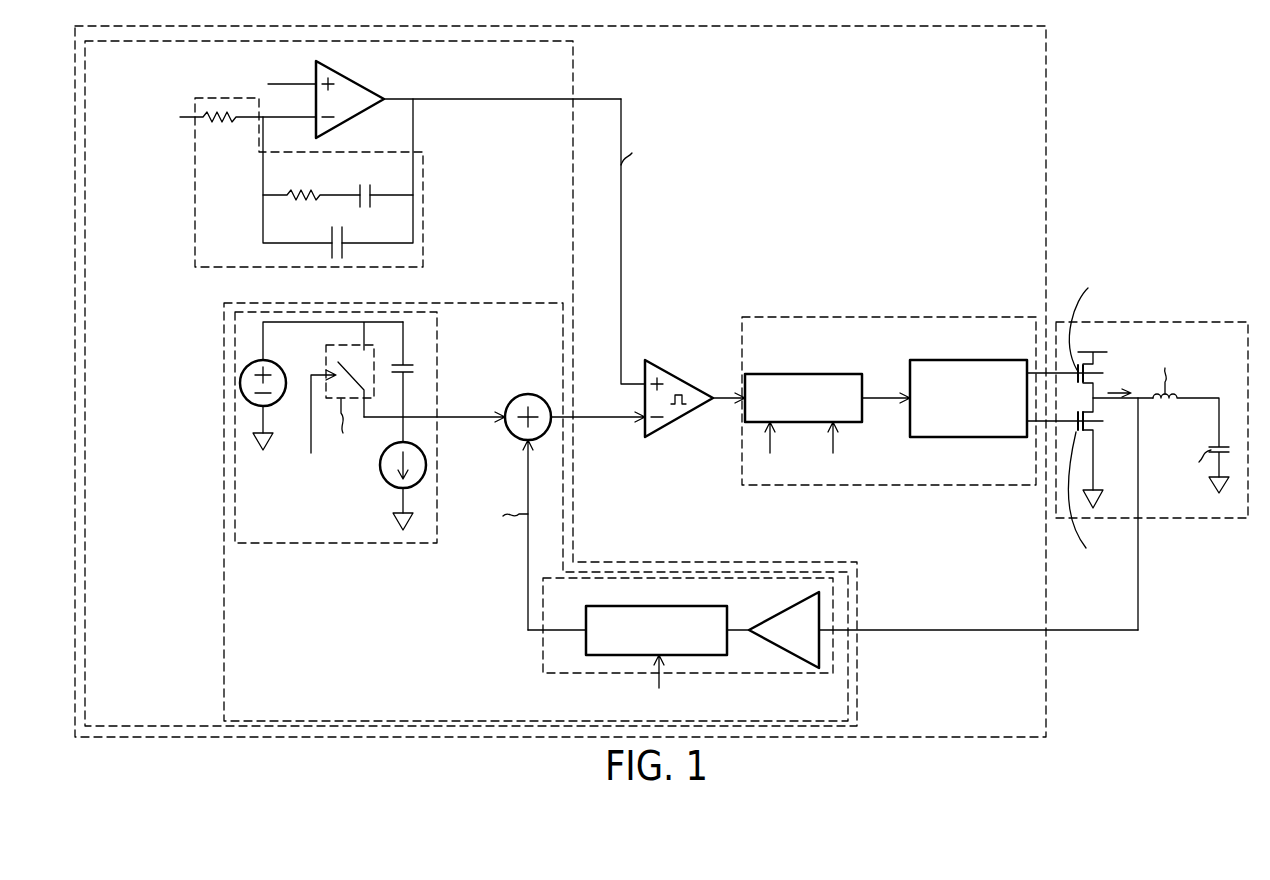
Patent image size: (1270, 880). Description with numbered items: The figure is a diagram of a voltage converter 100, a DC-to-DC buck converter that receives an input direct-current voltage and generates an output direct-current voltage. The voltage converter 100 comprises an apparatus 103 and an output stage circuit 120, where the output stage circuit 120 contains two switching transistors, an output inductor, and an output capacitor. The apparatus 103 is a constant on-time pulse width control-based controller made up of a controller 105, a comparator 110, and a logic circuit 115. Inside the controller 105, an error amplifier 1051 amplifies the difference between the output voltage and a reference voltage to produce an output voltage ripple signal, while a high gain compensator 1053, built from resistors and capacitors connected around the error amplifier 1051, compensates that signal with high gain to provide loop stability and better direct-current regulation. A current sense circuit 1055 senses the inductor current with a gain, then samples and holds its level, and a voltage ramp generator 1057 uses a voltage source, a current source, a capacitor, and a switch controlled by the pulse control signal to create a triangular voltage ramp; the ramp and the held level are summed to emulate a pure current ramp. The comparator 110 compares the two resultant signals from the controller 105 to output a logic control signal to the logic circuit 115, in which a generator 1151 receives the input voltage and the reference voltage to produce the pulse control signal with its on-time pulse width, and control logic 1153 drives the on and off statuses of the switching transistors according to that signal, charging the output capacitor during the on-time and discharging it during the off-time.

The voltage converter 100 is at (1113, 120).
The apparatus 103 is at (1046, 68).
The controller 105 is at (573, 68).
The error amplifier 1051 is at (346, 78).
The high gain compensator 1053 is at (195, 219).
The current sense circuit 1055 is at (745, 674).
The voltage ramp generator 1057 is at (335, 544).
The comparator 110 is at (685, 381).
The logic circuit 115 is at (889, 382).
The generator 1151 is at (798, 374).
The control logic 1153 is at (962, 360).
The output stage circuit 120 is at (1160, 322).